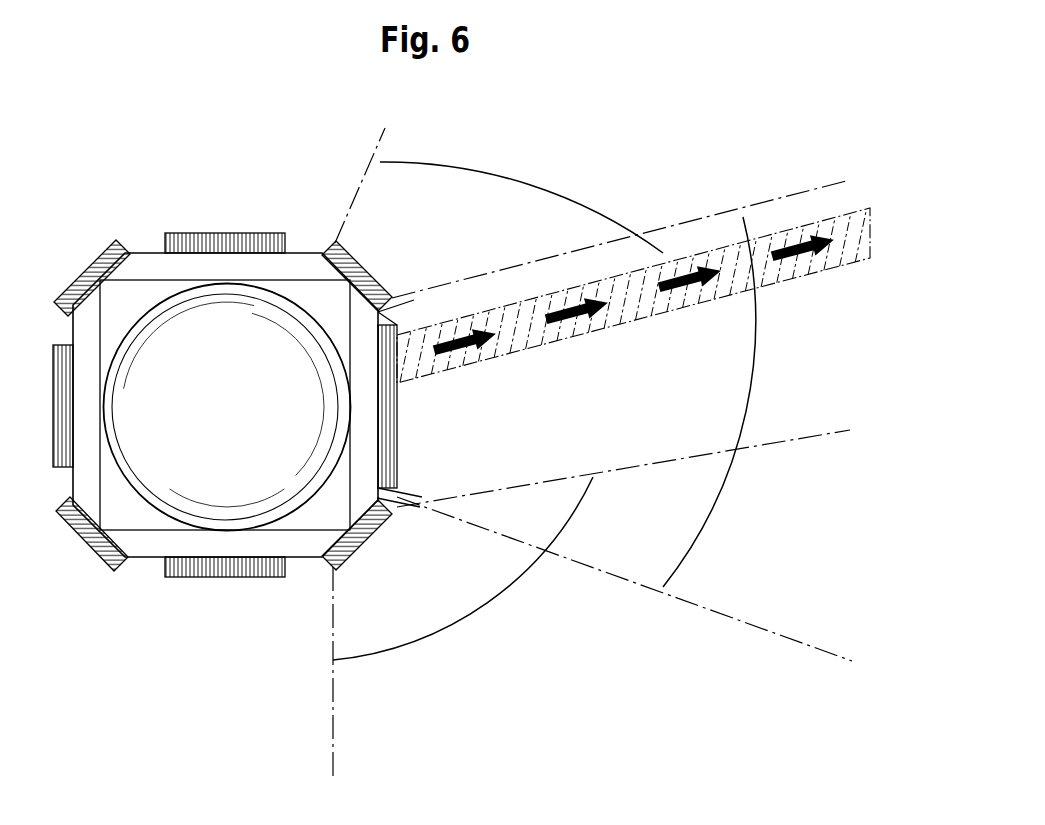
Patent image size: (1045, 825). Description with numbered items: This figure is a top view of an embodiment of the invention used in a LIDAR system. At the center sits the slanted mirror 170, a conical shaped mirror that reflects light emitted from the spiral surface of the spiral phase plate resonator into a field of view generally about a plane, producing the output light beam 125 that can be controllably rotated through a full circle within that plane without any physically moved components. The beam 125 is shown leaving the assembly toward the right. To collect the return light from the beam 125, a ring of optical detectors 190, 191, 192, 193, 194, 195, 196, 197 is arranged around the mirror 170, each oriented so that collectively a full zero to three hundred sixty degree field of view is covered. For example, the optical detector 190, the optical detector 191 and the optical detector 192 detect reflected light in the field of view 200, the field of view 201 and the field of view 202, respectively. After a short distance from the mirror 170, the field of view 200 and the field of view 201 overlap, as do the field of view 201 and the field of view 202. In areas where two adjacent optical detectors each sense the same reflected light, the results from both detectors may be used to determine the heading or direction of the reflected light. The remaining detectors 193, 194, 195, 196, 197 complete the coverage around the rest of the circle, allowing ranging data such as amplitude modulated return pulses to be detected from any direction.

The slanted mirror 170 is at (166, 297).
The optical detector 197 is at (257, 223).
The optical detector 196 is at (90, 268).
The optical detector 195 is at (53, 405).
The optical detector 194 is at (74, 530).
The optical detector 193 is at (226, 578).
The optical detector 192 is at (362, 540).
The optical detector 191 is at (400, 441).
The optical detector 190 is at (364, 272).
The output light beam 125 is at (597, 334).
The field of view 200 is at (512, 184).
The field of view 201 is at (752, 370).
The field of view 202 is at (472, 607).